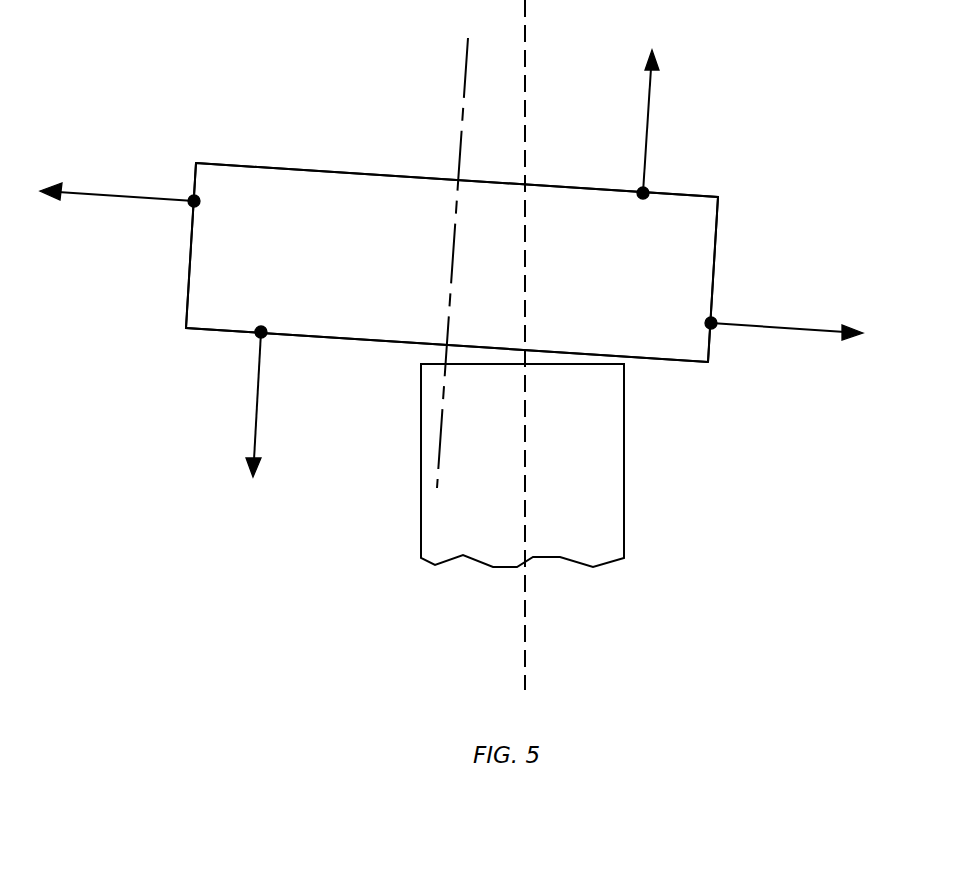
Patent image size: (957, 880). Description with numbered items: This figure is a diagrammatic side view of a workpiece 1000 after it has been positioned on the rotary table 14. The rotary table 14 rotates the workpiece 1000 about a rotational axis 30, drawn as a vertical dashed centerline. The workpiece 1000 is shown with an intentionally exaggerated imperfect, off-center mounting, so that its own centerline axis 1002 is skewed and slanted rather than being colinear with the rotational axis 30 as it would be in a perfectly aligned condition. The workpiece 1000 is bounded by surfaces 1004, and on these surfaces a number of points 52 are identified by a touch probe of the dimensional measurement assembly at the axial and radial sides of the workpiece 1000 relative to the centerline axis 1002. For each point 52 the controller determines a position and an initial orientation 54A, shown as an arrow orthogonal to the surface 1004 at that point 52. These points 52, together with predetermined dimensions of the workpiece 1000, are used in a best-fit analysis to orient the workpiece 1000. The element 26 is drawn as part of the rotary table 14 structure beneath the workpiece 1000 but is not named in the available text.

The workpiece 1000 is at (325, 196).
The centerline axis 1002 is at (465, 50).
The surfaces 1004 is at (244, 165).
The points 52 is at (190, 197).
The initial orientation 54A is at (67, 190).
The support post 26 is at (613, 405).
The rotational axis 30 is at (525, 442).
The rotary table 14 is at (645, 498).